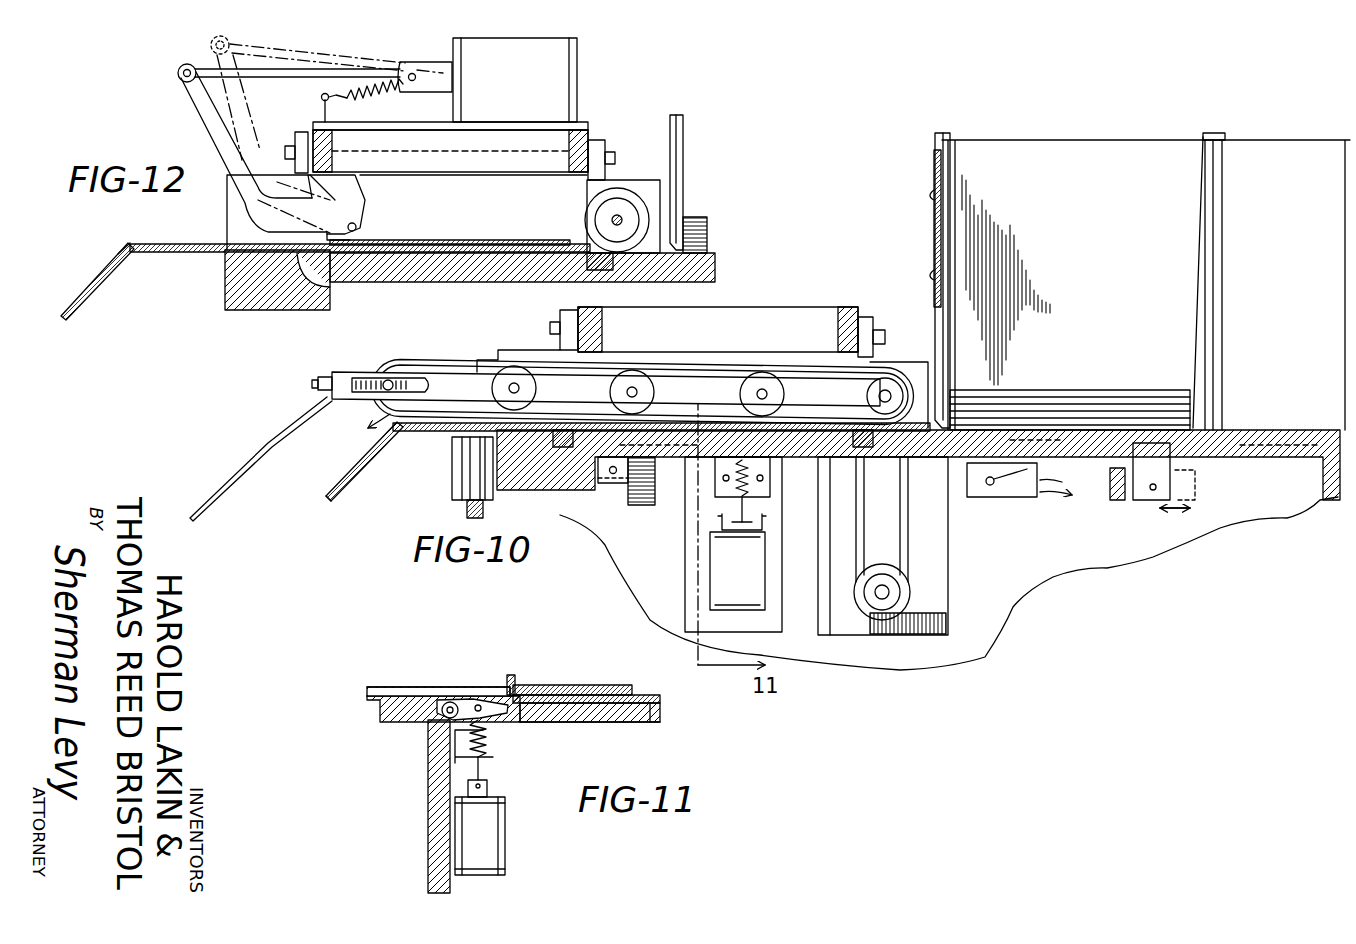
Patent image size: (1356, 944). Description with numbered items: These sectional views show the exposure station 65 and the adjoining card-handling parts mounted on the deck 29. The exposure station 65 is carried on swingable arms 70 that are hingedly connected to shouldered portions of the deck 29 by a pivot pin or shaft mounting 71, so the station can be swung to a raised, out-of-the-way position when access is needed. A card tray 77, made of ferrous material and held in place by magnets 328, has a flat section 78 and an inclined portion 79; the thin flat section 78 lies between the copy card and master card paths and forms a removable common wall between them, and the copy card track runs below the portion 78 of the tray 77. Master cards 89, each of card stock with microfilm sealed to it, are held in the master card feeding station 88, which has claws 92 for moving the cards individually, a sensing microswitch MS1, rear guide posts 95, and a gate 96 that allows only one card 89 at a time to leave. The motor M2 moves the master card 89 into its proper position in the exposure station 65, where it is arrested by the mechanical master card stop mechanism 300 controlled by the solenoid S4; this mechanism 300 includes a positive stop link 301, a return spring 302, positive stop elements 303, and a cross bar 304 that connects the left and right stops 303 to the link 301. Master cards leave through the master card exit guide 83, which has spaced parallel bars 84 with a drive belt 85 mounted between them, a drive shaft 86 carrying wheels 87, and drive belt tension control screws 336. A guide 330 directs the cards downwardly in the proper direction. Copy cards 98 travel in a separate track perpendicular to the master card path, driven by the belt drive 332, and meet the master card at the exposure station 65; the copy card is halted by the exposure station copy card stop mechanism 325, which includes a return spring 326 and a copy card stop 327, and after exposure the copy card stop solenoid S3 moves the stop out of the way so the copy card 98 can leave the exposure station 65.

In FIG. 12, the deck 29 is at (712, 265).
In FIG. 10, the deck 29 is at (1268, 472).
In FIG. 11, the deck 29 is at (567, 729).
In FIG. 11, the exposure station 65 is at (580, 630).
In FIG. 12, the swingable arms 70 is at (340, 146).
In FIG. 10, the swingable arms 70 is at (605, 312).
In FIG. 12, the pivot pin or shaft mounting 71 is at (285, 152).
In FIG. 10, the pivot pin or shaft mounting 71 is at (560, 327).
In FIG. 12, the card tray 77 is at (100, 292).
In FIG. 10, the card tray 77 is at (371, 461).
In FIG. 11, the card tray 77 is at (497, 680).
In FIG. 12, the flat section 78 is at (200, 253).
In FIG. 10, the flat section 78 is at (434, 428).
In FIG. 11, the flat section 78 is at (642, 692).
In FIG. 12, the inclined portion 79 is at (122, 254).
In FIG. 10, the inclined portion 79 is at (329, 499).
In FIG. 10, the master card exit guide 83 is at (425, 354).
In FIG. 10, the spaced parallel bars 84 is at (340, 371).
In FIG. 10, the drive belt 85 is at (478, 358).
In FIG. 12, the drive shaft 86 is at (618, 217).
In FIG. 10, the drive shaft 86 is at (887, 392).
In FIG. 12, the wheels 87 is at (600, 200).
In FIG. 10, the master card feeding station 88 is at (1162, 160).
In FIG. 12, the master cards 89 is at (560, 233).
In FIG. 10, the master cards 89 is at (1138, 387).
In FIG. 11, the master cards 89 is at (606, 685).
In FIG. 10, the claws 92 is at (1150, 497).
In FIG. 10, the rear guide posts 95 is at (1222, 260).
In FIG. 12, the gate 96 is at (685, 135).
In FIG. 10, the gate 96 is at (947, 328).
In FIG. 11, the copy cards 98 is at (645, 725).
In FIG. 12, the mechanical master card stop mechanism 300 is at (366, 209).
In FIG. 12, the positive stop link 301 is at (283, 72).
In FIG. 12, the return spring 302 is at (357, 97).
In FIG. 12, the positive stop elements 303 is at (440, 156).
In FIG. 12, the cross bar 304 is at (178, 79).
In FIG. 11, the exposure station copy card stop mechanism 325 is at (463, 686).
In FIG. 11, the return spring 326 is at (437, 748).
In FIG. 11, the copy card stop 327 is at (420, 721).
In FIG. 12, the magnets 328 is at (598, 253).
In FIG. 10, the magnets 328 is at (563, 430).
In FIG. 10, the guide 330 is at (268, 443).
In FIG. 10, the belt drive 332 is at (458, 504).
In FIG. 10, the drive belt tension control screws 336 is at (316, 384).
In FIG. 10, the motor M2 is at (937, 578).
In FIG. 10, the sensing microswitch MS1 is at (1017, 500).
In FIG. 10, the copy card stop solenoid S3 is at (750, 578).
In FIG. 11, the copy card stop solenoid S3 is at (493, 831).
In FIG. 12, the solenoid S4 is at (557, 84).